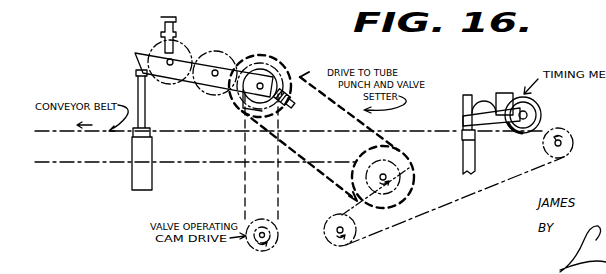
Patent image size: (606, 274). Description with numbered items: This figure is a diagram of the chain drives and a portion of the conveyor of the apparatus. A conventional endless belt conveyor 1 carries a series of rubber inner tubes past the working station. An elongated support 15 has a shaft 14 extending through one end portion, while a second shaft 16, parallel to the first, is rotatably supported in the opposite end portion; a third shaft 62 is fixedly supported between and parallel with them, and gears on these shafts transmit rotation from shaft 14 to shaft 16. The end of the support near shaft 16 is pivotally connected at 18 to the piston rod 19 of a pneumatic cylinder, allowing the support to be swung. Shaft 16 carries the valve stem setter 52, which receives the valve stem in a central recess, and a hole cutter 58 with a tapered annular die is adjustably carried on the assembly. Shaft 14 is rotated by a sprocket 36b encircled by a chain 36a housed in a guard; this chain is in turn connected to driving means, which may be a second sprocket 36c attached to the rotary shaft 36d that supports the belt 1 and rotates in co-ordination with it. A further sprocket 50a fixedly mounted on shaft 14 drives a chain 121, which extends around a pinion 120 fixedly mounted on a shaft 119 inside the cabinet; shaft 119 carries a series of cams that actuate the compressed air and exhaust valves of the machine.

The endless belt conveyor 1 is at (477, 197).
The shaft 14 is at (262, 84).
The elongated support 15 is at (141, 53).
The second shaft 16 is at (174, 61).
The pivotal connection 18 is at (139, 72).
The piston rod 19 is at (146, 104).
The chain 36a is at (306, 78).
The sprocket 36b is at (296, 74).
The second sprocket 36c is at (362, 157).
The rotary shaft 36d is at (413, 177).
The sprocket 50a is at (240, 108).
The valve stem setter 52 is at (162, 19).
The hole cutter 58 is at (298, 105).
The third shaft 62 is at (216, 70).
The shaft 119 is at (268, 237).
The pinion 120 is at (267, 217).
The chain 121 is at (245, 197).